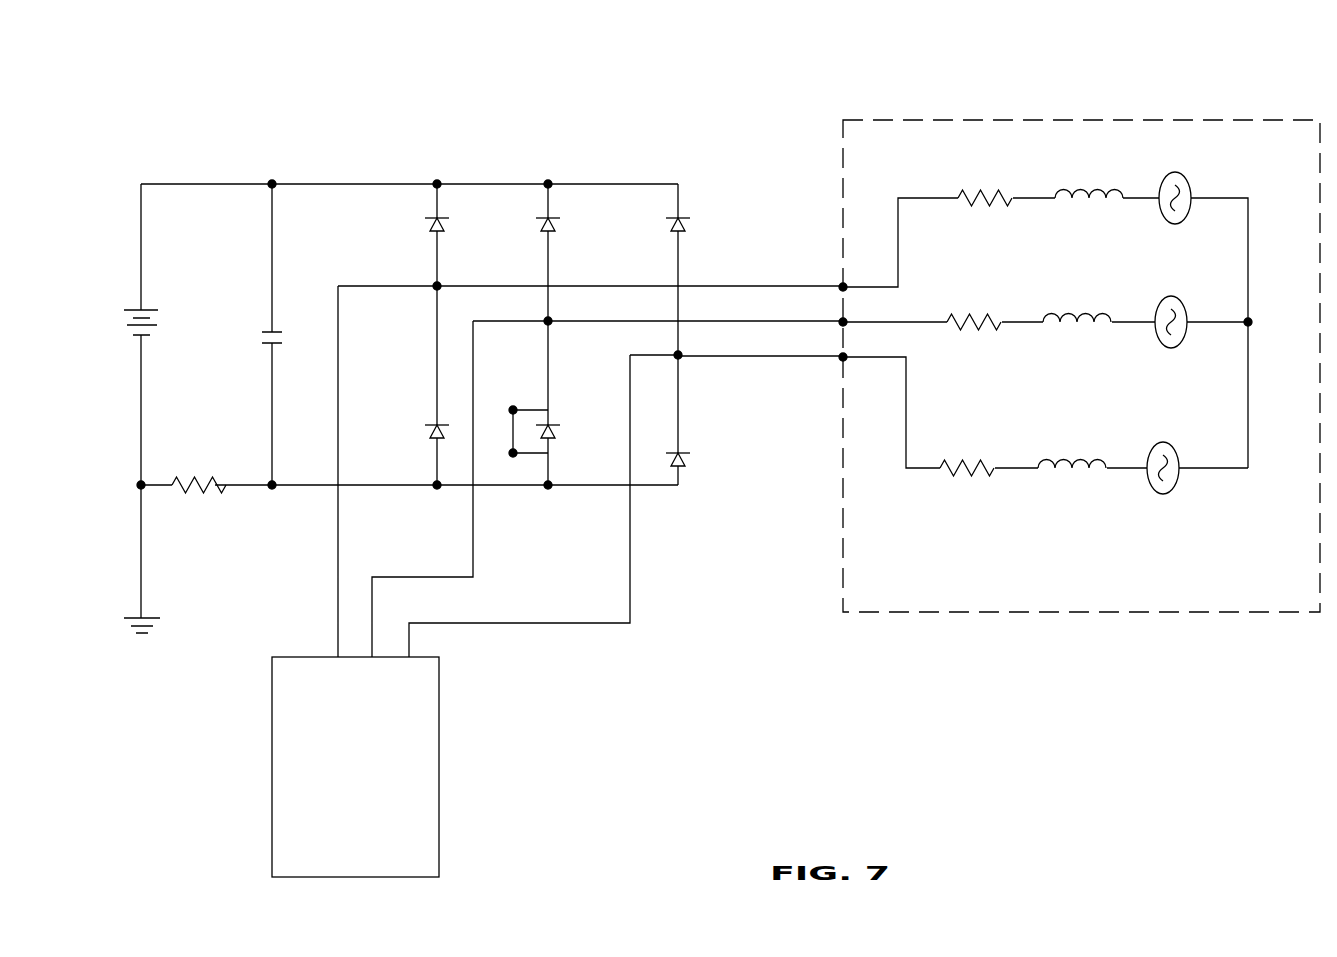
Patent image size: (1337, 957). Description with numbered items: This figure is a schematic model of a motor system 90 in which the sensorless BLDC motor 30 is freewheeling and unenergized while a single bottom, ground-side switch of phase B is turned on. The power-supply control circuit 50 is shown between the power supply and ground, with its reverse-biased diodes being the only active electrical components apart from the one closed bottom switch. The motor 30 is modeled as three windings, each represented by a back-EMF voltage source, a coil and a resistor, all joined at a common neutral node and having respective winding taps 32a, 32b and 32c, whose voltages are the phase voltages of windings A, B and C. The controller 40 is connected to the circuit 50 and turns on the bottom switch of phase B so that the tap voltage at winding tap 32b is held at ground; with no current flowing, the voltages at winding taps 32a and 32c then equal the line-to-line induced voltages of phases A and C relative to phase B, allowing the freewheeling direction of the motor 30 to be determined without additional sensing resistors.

The motor system 90 is at (215, 93).
The power-supply control circuit 50 is at (433, 142).
The sensorless BLDC motor 30 is at (1060, 85).
The controller 40 is at (272, 758).
The winding tap 32a is at (843, 287).
The winding tap 32b is at (843, 322).
The winding tap 32c is at (843, 357).